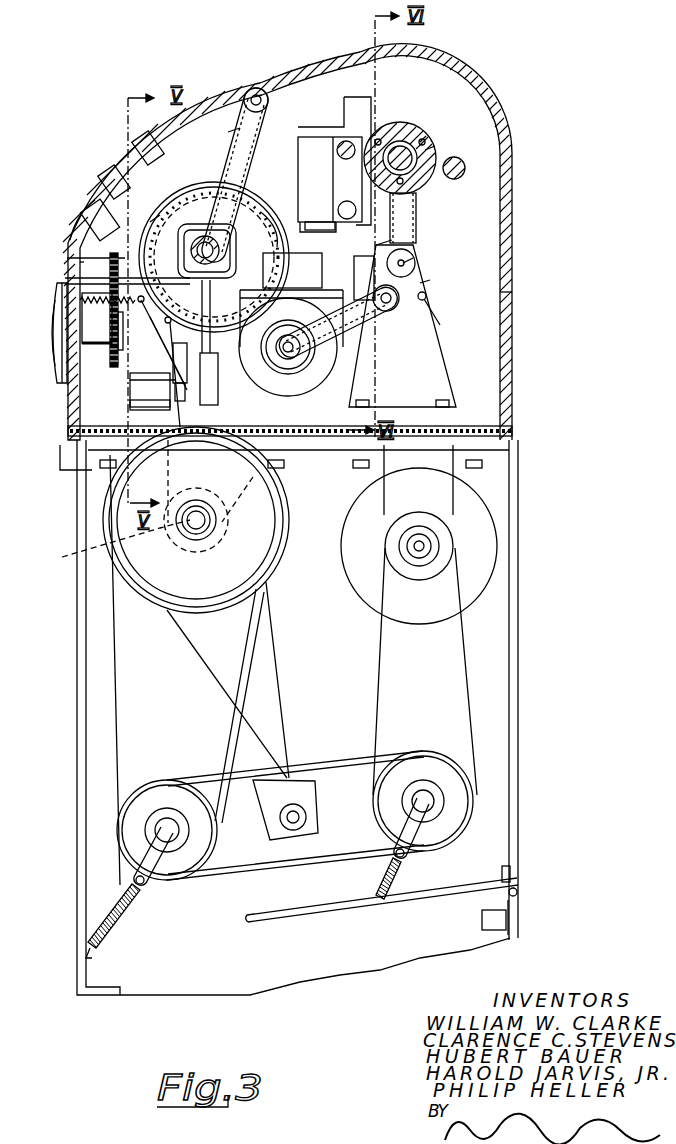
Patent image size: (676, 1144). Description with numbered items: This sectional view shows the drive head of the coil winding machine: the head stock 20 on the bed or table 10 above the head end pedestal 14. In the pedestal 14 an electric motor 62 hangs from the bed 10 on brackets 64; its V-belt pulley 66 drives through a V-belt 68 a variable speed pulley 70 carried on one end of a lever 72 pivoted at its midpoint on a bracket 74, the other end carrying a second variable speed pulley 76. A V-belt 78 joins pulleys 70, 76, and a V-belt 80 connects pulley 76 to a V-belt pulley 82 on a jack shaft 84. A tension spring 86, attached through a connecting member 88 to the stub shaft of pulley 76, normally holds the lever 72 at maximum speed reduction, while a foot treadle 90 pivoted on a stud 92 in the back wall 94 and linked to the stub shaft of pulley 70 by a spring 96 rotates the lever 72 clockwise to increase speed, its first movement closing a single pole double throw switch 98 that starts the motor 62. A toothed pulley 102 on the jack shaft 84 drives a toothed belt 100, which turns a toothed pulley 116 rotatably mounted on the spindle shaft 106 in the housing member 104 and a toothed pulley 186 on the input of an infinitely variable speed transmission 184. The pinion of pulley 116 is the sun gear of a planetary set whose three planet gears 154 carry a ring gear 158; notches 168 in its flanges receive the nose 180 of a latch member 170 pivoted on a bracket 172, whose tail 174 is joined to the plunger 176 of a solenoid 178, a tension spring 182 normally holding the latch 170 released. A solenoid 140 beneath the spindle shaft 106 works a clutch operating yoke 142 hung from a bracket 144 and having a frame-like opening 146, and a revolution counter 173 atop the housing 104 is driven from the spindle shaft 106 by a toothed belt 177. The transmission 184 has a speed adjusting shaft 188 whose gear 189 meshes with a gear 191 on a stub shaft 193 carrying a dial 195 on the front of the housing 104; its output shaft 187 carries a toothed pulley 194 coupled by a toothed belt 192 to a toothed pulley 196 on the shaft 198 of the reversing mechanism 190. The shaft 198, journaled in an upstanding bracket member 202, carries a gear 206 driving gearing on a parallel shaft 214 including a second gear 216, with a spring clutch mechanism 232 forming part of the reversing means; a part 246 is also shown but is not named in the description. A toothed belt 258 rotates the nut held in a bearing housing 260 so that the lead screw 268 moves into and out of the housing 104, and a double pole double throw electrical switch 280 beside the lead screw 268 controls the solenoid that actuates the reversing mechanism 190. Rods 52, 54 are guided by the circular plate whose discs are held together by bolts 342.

The bed or table 10 is at (102, 447).
The head end pedestal 14 is at (75, 630).
The head stock 20 is at (482, 78).
The rod 52 is at (466, 166).
The rod 54 is at (332, 148).
The electric motor 62 is at (485, 554).
The brackets 64 is at (418, 480).
The V-belt pulley 66 is at (392, 552).
The V-belt 68 is at (470, 677).
The variable speed pulley 70 is at (460, 799).
The lever 72 is at (301, 810).
The bracket 74 is at (230, 702).
The second variable speed pulley 76 is at (132, 828).
The V-belt 78 is at (264, 870).
The V-belt 80 is at (113, 704).
The V-belt pulley 82 is at (115, 514).
The jack shaft 84 is at (192, 533).
The tension spring 86 is at (110, 932).
The connecting member 88 is at (165, 880).
The foot treadle 90 is at (350, 908).
The stud 92 is at (520, 894).
The back wall 94 is at (516, 926).
The spring 96 is at (402, 876).
The single pole double throw switch 98 is at (480, 914).
The toothed belt 100 is at (288, 432).
The toothed pulley 102 is at (64, 557).
The housing member 104 is at (513, 296).
The spindle shaft 106 is at (256, 218).
The toothed pulley 116 is at (184, 215).
The solenoid 140 is at (228, 405).
The clutch operating yoke 142 is at (196, 316).
The bracket 144 is at (207, 230).
The frame-like opening 146 is at (68, 232).
The planet gears 154 is at (84, 266).
The ring gear 158 is at (150, 224).
The notches 168 is at (247, 190).
The latch member 170 is at (168, 312).
The bracket 172 is at (178, 342).
The revolution counter 173 is at (272, 80).
The tail 174 is at (178, 380).
The plunger 176 is at (183, 386).
The toothed belt 177 is at (228, 132).
The solenoid 178 is at (140, 392).
The nose 180 is at (78, 300).
The tension spring 182 is at (66, 312).
The infinitely variable speed transmission 184 is at (246, 318).
The toothed pulley 186 is at (318, 370).
The power output shaft 187 is at (310, 360).
The speed adjusting shaft 188 is at (64, 281).
The gear 189 is at (80, 260).
The reversing mechanism 190 is at (430, 369).
The gear 191 is at (104, 312).
The toothed belt 192 is at (350, 330).
The stub shaft 193 is at (90, 337).
The toothed pulley 194 is at (330, 350).
The dial 195 is at (58, 352).
The toothed pulley 196 is at (392, 308).
The shaft 198 is at (436, 283).
The bracket member 202 is at (414, 269).
The gear 206 is at (363, 276).
The shaft 214 is at (442, 322).
The second gear 216 is at (430, 297).
The spring clutch mechanism 232 is at (410, 262).
The arm 246 is at (416, 251).
The toothed belt 258 is at (420, 218).
The bearing housing 260 is at (440, 143).
The lead screw 268 is at (398, 150).
The double pole double throw electrical switch 280 is at (318, 202).
The bolts 342 is at (436, 130).